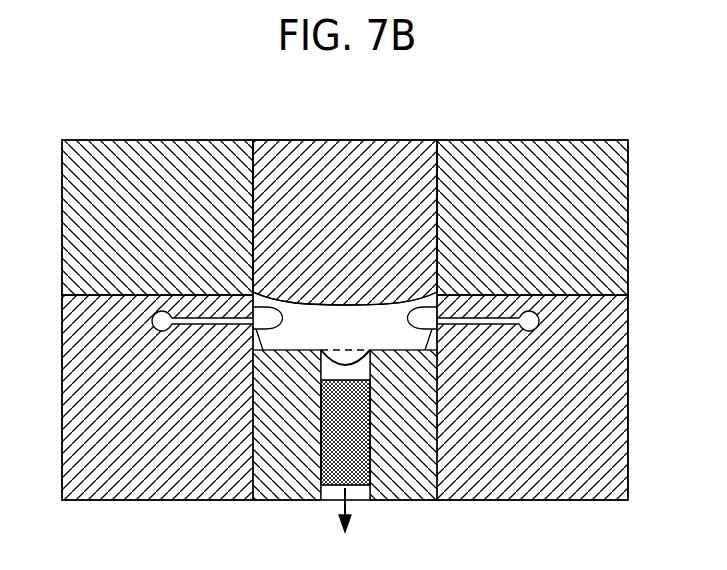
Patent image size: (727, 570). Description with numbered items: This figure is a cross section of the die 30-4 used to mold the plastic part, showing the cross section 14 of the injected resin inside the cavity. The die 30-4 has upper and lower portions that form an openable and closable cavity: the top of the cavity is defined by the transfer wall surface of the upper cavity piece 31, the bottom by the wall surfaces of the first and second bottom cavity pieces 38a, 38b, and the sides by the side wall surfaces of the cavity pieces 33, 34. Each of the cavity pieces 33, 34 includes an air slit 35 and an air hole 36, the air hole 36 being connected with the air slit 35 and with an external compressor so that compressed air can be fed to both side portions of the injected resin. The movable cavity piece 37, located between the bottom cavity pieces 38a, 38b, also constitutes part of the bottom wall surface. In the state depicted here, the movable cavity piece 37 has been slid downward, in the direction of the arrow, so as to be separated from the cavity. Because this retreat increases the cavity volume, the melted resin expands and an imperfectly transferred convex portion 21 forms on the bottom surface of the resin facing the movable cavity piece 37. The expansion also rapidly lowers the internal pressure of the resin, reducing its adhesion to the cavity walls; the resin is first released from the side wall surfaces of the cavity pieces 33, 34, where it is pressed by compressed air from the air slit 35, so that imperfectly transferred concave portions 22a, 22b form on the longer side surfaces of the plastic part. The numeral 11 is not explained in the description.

The die 30-4 is at (601, 104).
The cavity surface 11 is at (301, 296).
The cross section of the plastic part 14 is at (385, 316).
The upper cavity piece 31 is at (349, 150).
The imperfectly transferred concave portion 22a is at (468, 311).
The imperfectly transferred concave portion 22b is at (250, 314).
The cavity piece 33 is at (155, 480).
The cavity piece 34 is at (530, 490).
The air slit 35 is at (200, 330).
The air hole 36 is at (152, 321).
The first bottom cavity piece 38a is at (267, 490).
The second bottom cavity piece 38b is at (420, 490).
The imperfectly transferred convex portion 21 is at (338, 368).
The movable cavity piece 37 is at (360, 470).